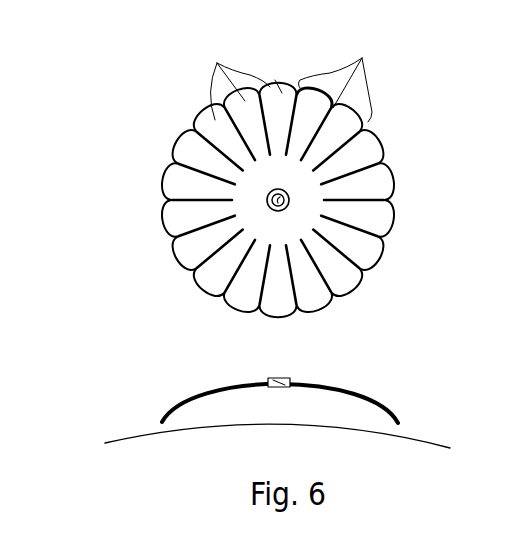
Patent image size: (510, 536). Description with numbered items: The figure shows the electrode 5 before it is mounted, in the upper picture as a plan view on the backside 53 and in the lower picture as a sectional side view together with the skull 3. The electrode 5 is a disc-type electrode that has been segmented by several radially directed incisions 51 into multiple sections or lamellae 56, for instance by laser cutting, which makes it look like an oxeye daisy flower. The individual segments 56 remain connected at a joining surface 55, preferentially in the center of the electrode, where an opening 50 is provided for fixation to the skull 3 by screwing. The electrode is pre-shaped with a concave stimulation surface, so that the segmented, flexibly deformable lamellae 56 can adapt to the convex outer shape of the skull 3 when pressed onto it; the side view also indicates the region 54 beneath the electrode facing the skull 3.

The electrode 5 is at (406, 221).
The opening 50 is at (288, 194).
The incision 51 is at (340, 75).
The lamella 56 is at (237, 74).
The joining surface 55 is at (256, 218).
The backside 53 is at (200, 392).
The lower face 54 is at (225, 393).
The skull 3 is at (140, 437).